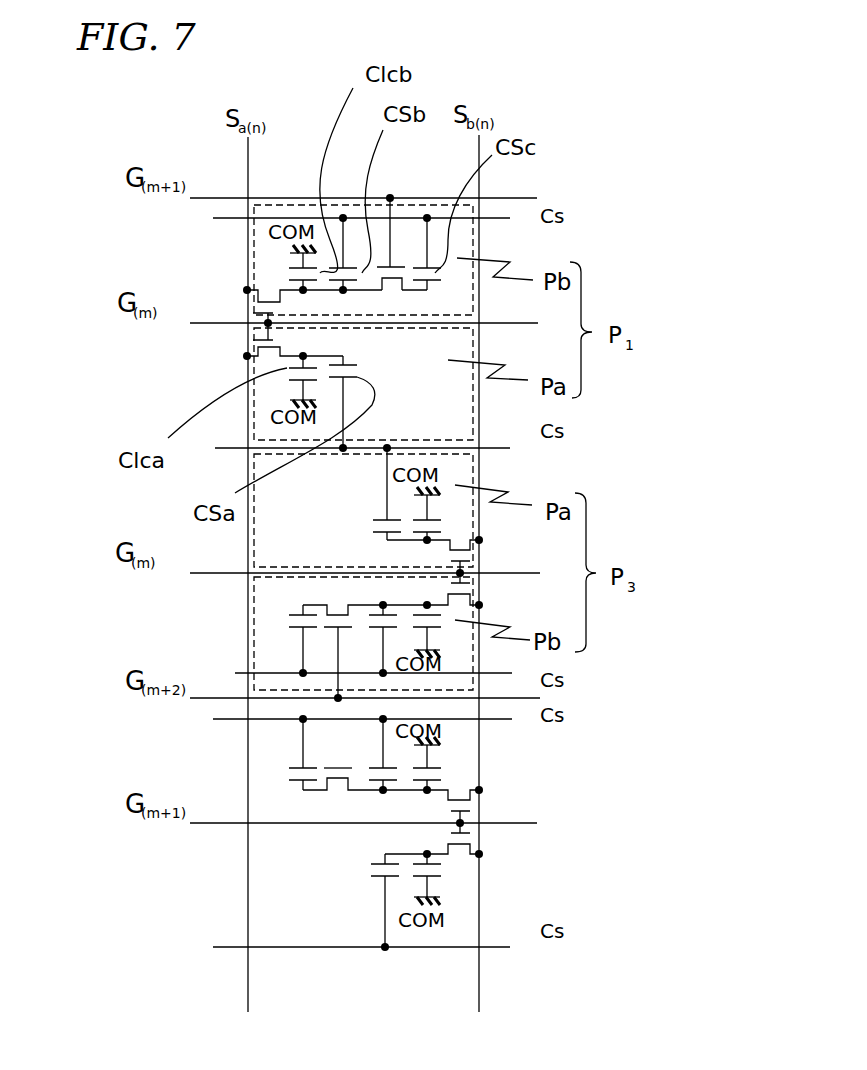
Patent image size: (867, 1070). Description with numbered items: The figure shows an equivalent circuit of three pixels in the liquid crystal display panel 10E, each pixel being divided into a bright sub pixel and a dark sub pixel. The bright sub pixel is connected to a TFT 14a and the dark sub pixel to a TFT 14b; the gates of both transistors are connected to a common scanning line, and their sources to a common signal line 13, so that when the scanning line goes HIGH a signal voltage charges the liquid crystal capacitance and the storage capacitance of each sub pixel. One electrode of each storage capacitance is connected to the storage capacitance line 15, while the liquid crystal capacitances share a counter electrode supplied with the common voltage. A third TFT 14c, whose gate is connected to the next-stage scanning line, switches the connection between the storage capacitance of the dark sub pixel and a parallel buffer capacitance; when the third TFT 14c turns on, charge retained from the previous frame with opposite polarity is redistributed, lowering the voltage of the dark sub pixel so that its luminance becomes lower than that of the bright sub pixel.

The liquid crystal display panel 10E is at (617, 146).
The signal line 13 is at (248, 155).
The TFT 14a is at (255, 340).
The TFT 14b is at (255, 307).
The third TFT 14c is at (392, 292).
The storage capacitance line 15 is at (510, 220).